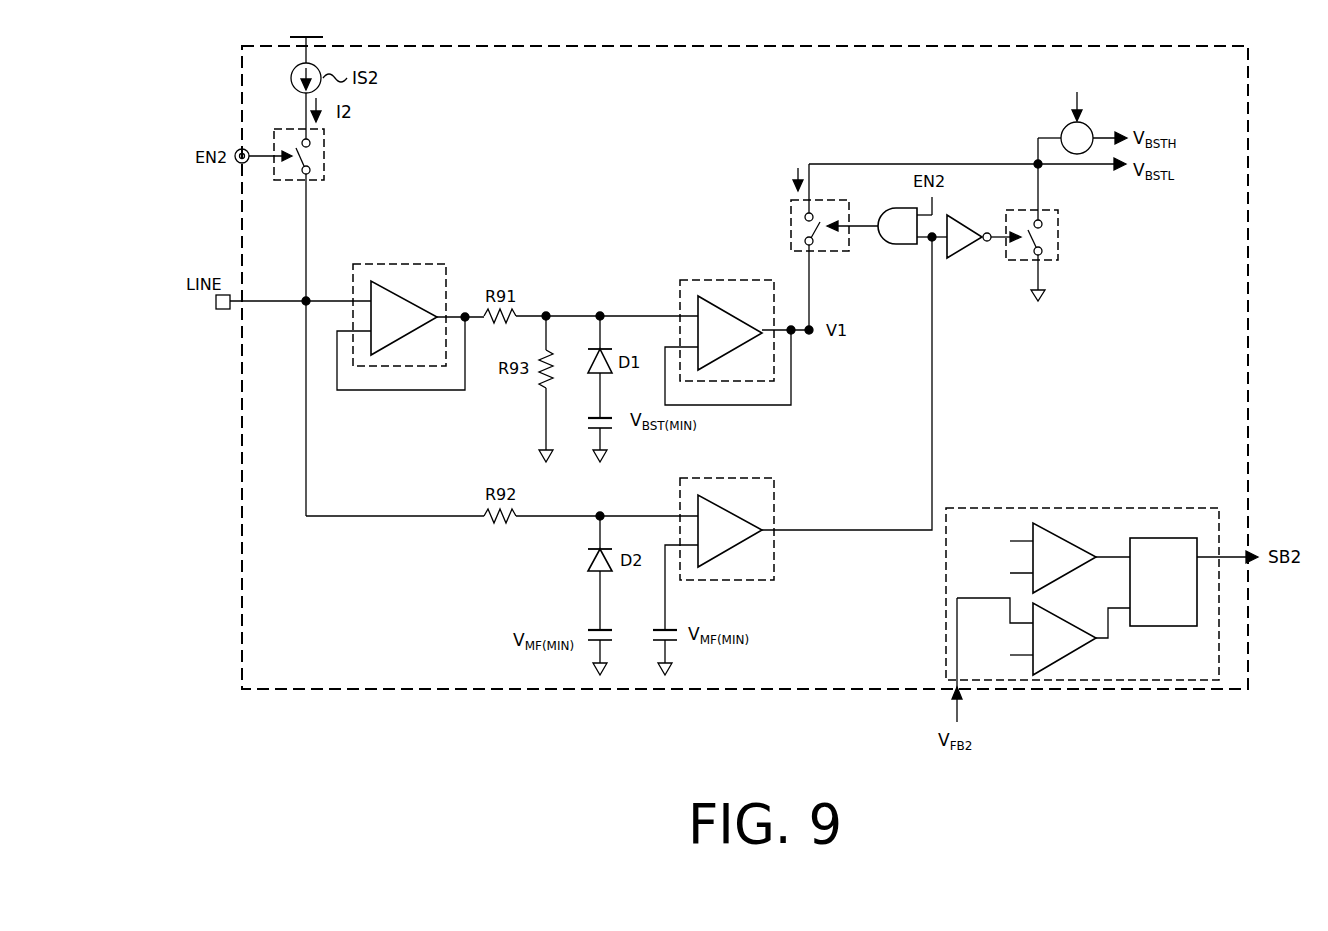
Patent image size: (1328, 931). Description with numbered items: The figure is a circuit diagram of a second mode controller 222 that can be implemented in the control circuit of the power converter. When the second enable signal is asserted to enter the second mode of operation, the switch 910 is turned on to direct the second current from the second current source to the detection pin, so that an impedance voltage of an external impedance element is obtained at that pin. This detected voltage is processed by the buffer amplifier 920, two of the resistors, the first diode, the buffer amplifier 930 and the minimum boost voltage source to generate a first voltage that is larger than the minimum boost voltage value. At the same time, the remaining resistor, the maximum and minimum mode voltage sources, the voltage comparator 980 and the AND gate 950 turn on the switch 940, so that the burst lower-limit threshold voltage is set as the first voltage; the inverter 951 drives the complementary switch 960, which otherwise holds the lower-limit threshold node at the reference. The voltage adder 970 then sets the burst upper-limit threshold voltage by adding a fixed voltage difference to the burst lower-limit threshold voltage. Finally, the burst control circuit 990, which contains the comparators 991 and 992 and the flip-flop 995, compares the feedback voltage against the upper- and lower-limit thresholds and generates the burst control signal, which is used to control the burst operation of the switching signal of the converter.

The second mode controller 222 is at (348, 644).
The switch 910 is at (326, 154).
The buffer amplifier 920 is at (404, 264).
The buffer amplifier 930 is at (727, 286).
The switch 940 is at (790, 214).
The AND gate 950 is at (896, 245).
The inverter 951 is at (968, 256).
The switch 960 is at (1060, 230).
The voltage adder 970 is at (1090, 128).
The voltage comparator 980 is at (727, 478).
The burst control circuit 990 is at (1082, 595).
The comparator 991 is at (1073, 552).
The comparator 992 is at (1070, 633).
The flip-flop 995 is at (1165, 627).